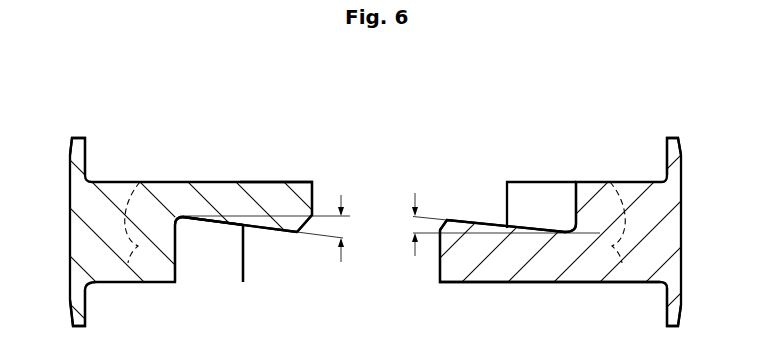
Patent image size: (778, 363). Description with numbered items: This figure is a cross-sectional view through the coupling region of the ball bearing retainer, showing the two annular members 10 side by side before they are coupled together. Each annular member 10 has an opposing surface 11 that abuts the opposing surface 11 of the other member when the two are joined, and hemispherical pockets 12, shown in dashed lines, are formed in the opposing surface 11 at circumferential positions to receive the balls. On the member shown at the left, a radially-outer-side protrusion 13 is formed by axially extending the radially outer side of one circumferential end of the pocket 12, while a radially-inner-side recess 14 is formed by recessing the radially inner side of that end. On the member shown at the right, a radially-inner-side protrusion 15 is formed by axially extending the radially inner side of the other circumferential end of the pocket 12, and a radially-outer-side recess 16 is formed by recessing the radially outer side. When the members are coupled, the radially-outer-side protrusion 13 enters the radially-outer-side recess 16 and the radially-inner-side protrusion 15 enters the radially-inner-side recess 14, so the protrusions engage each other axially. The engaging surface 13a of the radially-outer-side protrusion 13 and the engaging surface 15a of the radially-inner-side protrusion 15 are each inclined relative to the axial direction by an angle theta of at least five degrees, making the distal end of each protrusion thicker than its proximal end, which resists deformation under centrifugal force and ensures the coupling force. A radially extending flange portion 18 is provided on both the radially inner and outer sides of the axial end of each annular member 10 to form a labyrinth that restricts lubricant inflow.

The annular member 10 is at (68, 212).
The opposing surface 11 is at (245, 257).
The pocket 12 is at (137, 252).
The radially-outer-side protrusion 13 is at (267, 190).
The engaging surface 13a is at (272, 231).
The radially-inner-side recess 14 is at (176, 251).
The radially-inner-side protrusion 15 is at (497, 266).
The engaging surface 15a is at (471, 221).
The radially-outer-side recess 16 is at (575, 204).
The flange portion 18 is at (78, 149).